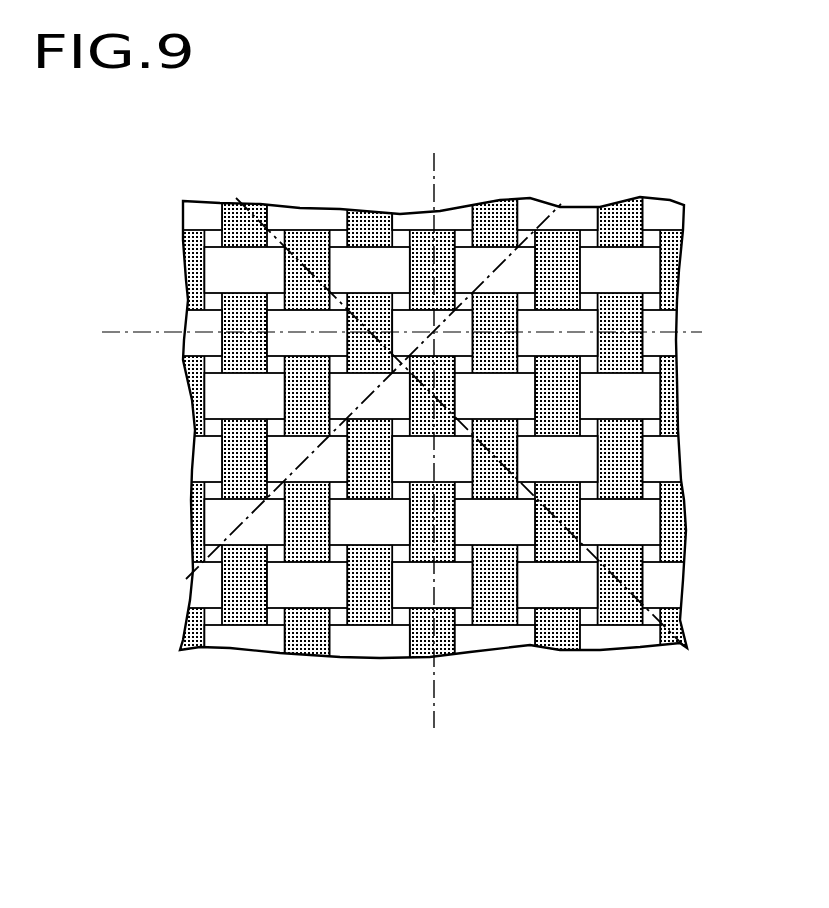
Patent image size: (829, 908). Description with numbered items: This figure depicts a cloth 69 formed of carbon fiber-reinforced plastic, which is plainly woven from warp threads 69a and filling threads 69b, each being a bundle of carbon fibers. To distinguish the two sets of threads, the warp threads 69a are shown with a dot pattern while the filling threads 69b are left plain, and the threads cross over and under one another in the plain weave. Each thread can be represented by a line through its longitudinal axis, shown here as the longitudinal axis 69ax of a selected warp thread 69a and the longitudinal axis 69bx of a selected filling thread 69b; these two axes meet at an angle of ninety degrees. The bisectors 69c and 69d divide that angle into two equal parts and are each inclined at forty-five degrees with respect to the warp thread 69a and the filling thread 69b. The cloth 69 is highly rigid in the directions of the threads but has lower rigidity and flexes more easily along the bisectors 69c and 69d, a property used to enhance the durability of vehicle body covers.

The cloth 69 is at (468, 380).
The warp thread 69a is at (362, 212).
The filling thread 69b is at (623, 265).
The bisector 69c is at (293, 472).
The bisector 69d is at (558, 525).
The longitudinal axis 69ax is at (433, 715).
The longitudinal axis 69bx is at (172, 337).